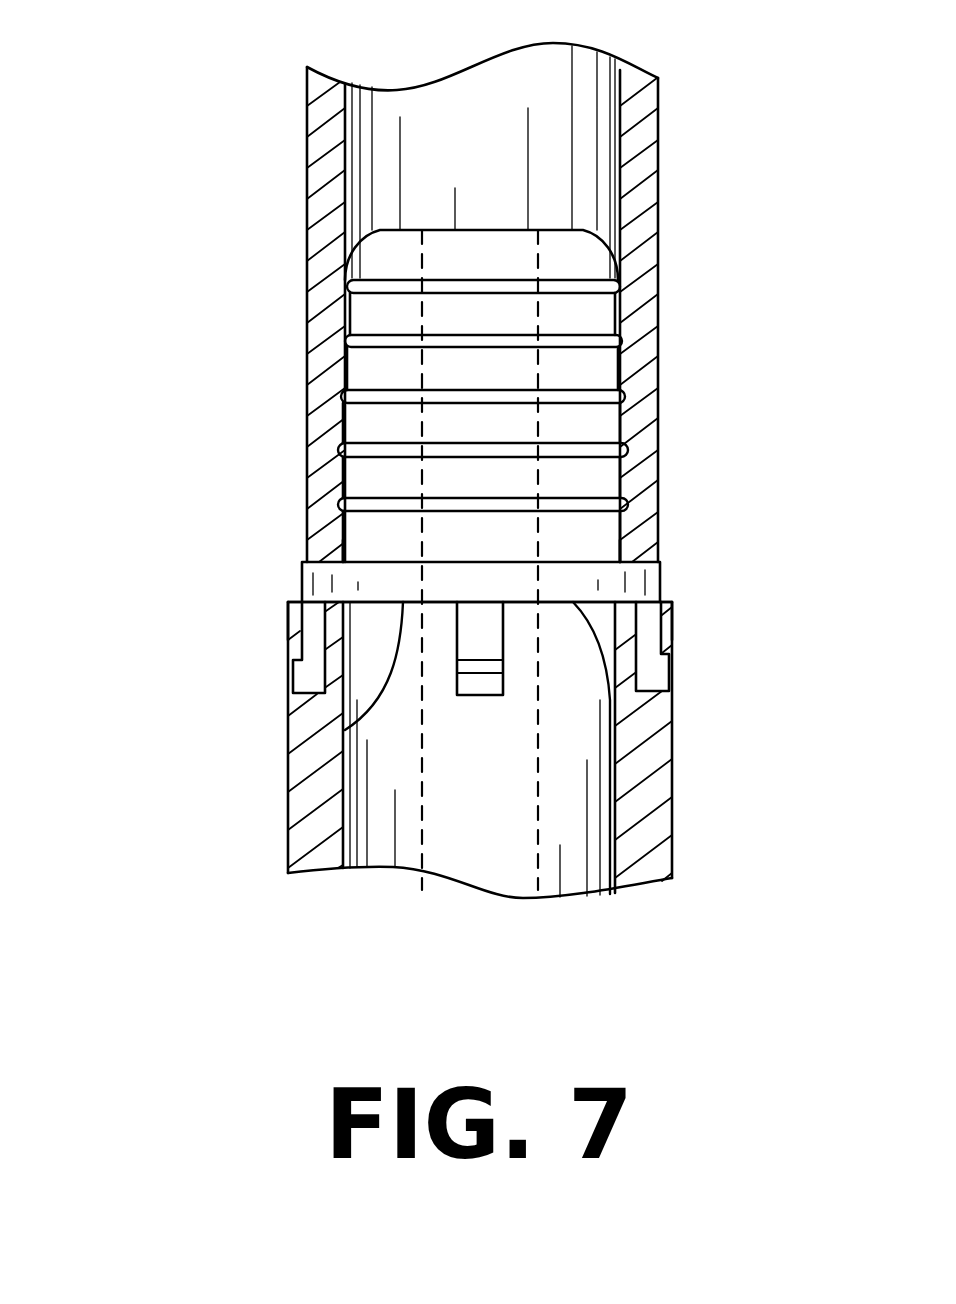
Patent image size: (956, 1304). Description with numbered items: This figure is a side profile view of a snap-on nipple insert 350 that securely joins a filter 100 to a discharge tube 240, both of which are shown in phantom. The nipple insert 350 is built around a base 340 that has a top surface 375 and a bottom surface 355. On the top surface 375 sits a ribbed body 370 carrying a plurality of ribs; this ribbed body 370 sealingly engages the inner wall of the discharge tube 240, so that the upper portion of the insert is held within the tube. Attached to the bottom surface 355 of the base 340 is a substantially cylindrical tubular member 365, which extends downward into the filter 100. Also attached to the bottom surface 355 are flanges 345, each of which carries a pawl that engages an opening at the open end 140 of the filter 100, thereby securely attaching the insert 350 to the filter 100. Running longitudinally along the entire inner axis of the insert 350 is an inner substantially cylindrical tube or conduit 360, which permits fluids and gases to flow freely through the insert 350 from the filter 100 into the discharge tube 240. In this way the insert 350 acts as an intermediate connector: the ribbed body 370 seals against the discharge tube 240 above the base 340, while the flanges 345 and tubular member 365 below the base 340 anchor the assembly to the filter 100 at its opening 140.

The filter 100 is at (288, 813).
The opening 140 is at (290, 603).
The discharge tube 240 is at (307, 178).
The base 340 is at (650, 582).
The flanges 345 is at (310, 673).
The snap-on nipple insert 350 is at (235, 419).
The bottom surface 355 is at (352, 734).
The inner substantially cylindrical tube or conduit 360 is at (495, 310).
The substantially cylindrical tubular member 365 is at (652, 838).
The ribbed body 370 is at (582, 278).
The top surface 375 is at (575, 560).